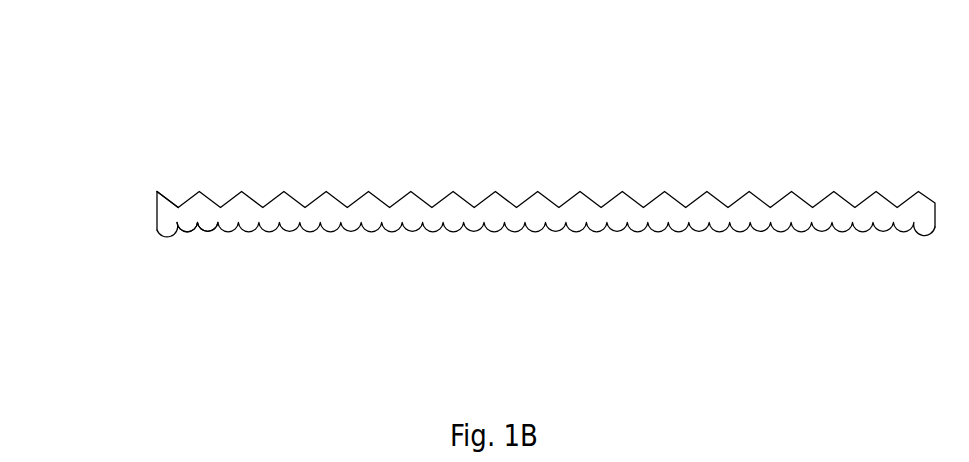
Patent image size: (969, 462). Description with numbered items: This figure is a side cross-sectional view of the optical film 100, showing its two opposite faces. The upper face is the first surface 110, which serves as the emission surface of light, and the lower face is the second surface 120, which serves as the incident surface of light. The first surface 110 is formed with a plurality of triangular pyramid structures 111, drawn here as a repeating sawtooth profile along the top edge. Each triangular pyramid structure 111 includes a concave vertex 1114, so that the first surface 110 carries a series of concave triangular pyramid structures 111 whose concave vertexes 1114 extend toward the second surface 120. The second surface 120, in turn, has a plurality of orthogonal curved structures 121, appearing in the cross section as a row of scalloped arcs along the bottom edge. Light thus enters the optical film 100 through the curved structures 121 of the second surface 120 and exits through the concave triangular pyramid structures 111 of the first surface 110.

The optical film 100 is at (480, 190).
The first surface 110 is at (255, 90).
The triangular pyramid structure 111 is at (177, 198).
The concave vertex 1114 is at (177, 204).
The second surface 120 is at (175, 302).
The orthogonal curved structure 121 is at (205, 232).